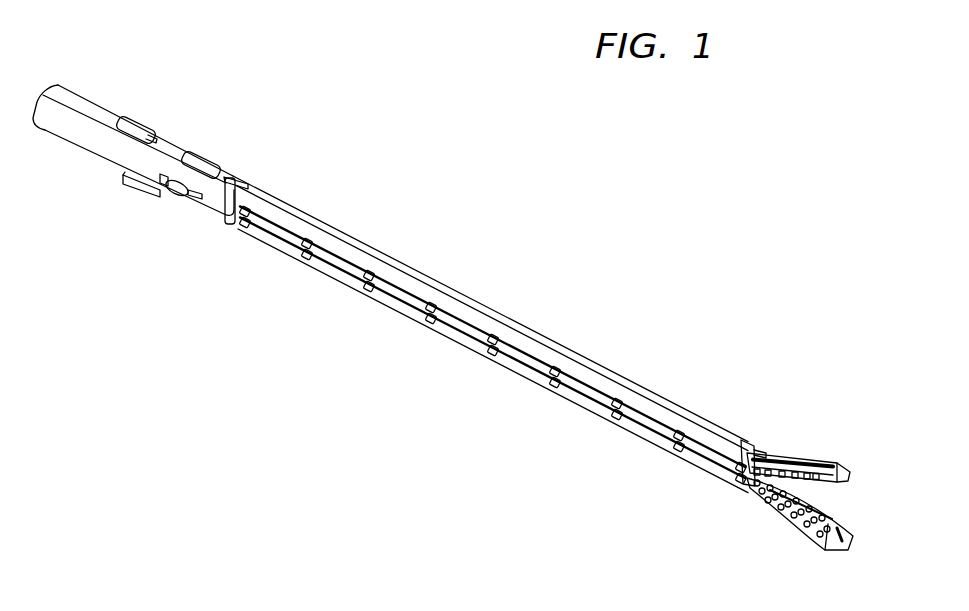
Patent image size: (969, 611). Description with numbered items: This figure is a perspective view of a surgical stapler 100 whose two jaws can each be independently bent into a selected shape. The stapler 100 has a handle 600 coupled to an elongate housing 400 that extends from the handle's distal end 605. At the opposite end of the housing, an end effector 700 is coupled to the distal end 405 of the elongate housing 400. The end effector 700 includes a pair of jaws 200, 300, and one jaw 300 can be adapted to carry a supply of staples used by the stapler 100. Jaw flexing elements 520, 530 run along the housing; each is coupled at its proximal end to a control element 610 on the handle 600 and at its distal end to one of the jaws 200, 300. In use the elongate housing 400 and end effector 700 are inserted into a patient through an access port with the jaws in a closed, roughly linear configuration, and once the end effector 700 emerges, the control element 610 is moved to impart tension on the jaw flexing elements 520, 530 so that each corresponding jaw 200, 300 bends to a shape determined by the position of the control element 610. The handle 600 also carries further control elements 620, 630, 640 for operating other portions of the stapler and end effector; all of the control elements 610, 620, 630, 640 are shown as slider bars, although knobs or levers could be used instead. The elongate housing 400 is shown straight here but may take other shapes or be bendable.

The surgical stapler 100 is at (489, 200).
The jaw 200 is at (803, 458).
The jaw 300 is at (826, 551).
The elongate housing 400 is at (528, 328).
The distal end of the elongate housing 405 is at (726, 498).
The jaw flexing element 520 is at (518, 354).
The jaw flexing element 530 is at (541, 384).
The handle 600 is at (180, 138).
The distal end of the handle 605 is at (272, 151).
The control element 610 is at (178, 197).
The control element 620 is at (221, 160).
The control element 630 is at (137, 190).
The control element 640 is at (137, 116).
The end effector 700 is at (845, 494).